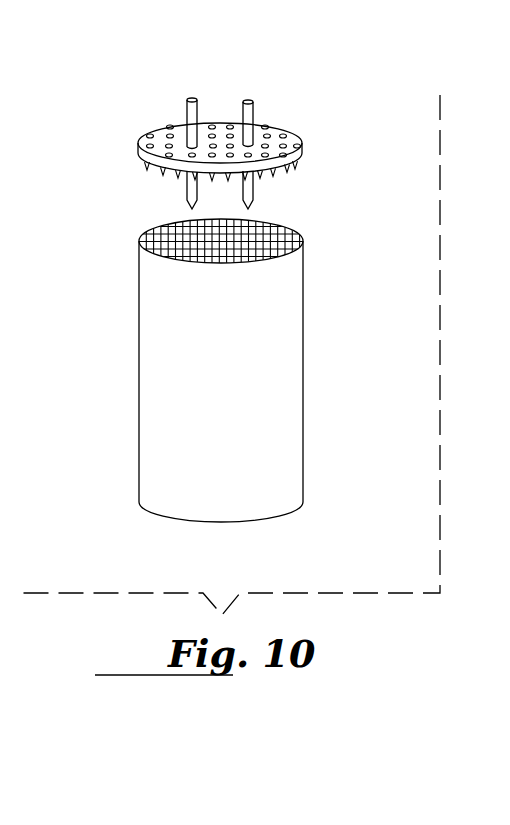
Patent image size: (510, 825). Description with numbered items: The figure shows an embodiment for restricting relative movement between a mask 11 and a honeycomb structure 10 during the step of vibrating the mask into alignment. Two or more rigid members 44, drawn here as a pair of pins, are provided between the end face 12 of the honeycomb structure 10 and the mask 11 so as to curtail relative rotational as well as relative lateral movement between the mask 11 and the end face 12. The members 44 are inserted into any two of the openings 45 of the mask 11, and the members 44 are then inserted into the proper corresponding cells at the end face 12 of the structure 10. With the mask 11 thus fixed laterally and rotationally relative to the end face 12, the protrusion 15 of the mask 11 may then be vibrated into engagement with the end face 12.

The honeycomb structure 10 is at (138, 415).
The mask 11 is at (313, 137).
The end face 12 is at (303, 229).
The protrusion 15 is at (303, 168).
The rigid members 44 is at (243, 117).
The openings 45 is at (248, 144).